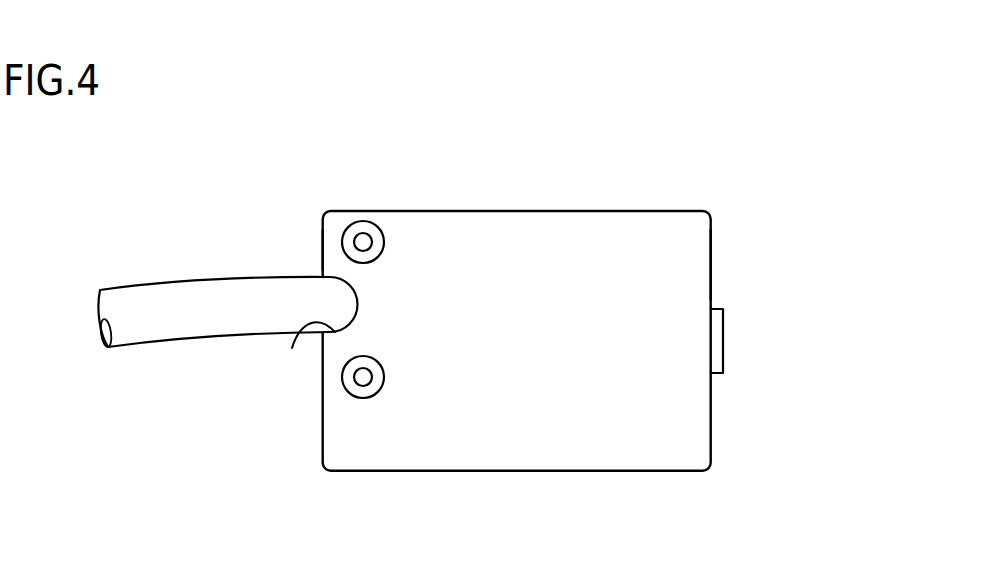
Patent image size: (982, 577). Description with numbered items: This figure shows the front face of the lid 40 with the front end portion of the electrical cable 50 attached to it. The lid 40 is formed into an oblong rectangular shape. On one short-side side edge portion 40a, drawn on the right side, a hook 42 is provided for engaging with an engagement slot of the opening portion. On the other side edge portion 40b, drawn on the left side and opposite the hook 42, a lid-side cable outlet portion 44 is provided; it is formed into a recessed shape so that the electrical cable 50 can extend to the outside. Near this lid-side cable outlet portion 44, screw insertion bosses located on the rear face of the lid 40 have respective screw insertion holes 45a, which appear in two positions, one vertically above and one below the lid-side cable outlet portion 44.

The lid 40 is at (578, 210).
The one short-side side edge portion 40a is at (713, 240).
The other side edge portion 40b is at (322, 243).
The hook 42 is at (723, 323).
The lid-side cable outlet portion 44 is at (292, 348).
The screw insertion hole 45a is at (372, 237).
The electrical cable 50 is at (218, 320).